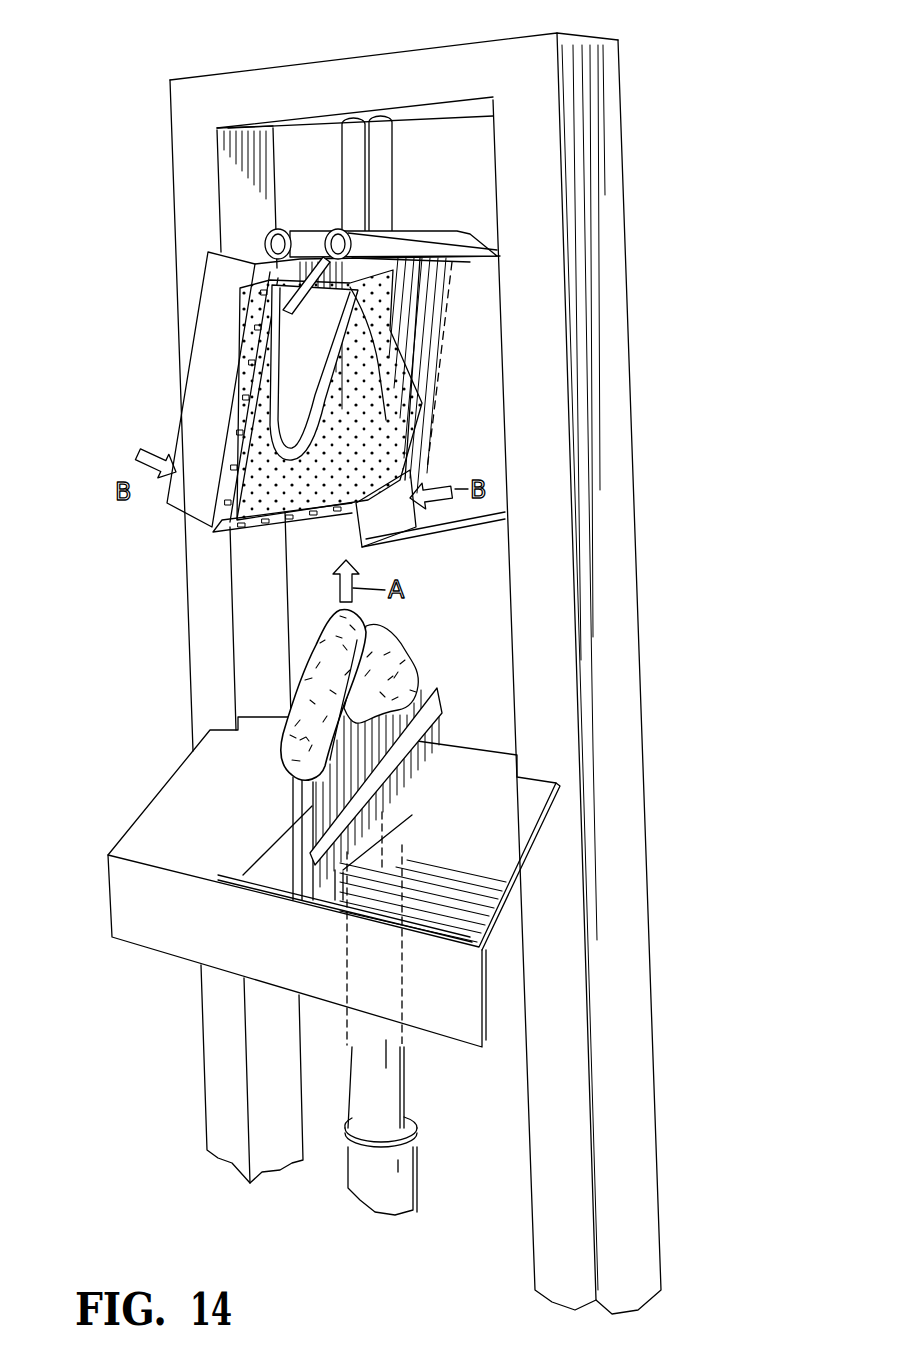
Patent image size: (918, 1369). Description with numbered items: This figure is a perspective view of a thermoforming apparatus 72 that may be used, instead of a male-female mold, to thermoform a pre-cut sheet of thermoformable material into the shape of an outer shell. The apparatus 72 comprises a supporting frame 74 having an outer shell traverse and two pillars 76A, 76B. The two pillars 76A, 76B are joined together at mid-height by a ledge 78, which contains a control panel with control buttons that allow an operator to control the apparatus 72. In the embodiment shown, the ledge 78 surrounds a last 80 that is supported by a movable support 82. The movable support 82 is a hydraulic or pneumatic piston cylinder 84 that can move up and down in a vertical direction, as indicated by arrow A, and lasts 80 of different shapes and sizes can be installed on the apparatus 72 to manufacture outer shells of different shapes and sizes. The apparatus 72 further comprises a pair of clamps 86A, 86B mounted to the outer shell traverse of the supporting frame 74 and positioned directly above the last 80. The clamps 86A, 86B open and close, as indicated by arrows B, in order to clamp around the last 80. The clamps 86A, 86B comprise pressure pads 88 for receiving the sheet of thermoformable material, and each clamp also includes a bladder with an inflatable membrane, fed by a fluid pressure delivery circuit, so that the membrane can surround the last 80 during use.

The apparatus 72 is at (404, 659).
The supporting frame 74 is at (467, 62).
The pillar 76A is at (205, 586).
The pillar 76B is at (607, 633).
The ledge 78 is at (160, 830).
The last 80 is at (378, 665).
The movable support 82 is at (372, 1130).
The piston cylinder 84 is at (382, 1097).
The clamp 86A is at (205, 373).
The clamp 86B is at (470, 373).
The pressure pads 88 is at (268, 338).